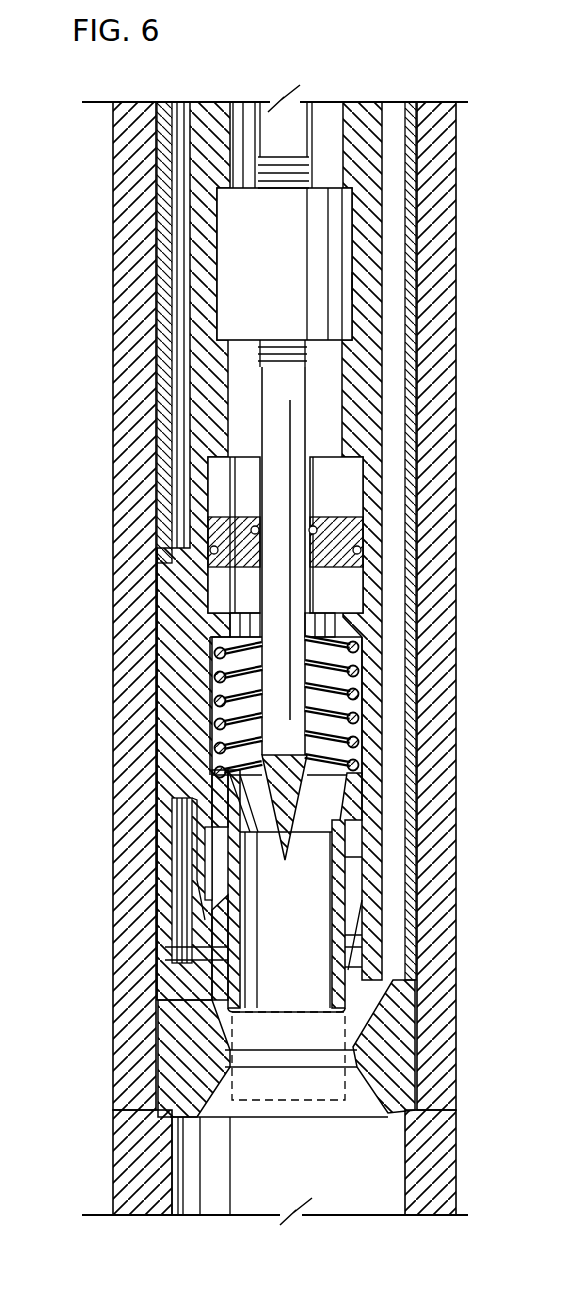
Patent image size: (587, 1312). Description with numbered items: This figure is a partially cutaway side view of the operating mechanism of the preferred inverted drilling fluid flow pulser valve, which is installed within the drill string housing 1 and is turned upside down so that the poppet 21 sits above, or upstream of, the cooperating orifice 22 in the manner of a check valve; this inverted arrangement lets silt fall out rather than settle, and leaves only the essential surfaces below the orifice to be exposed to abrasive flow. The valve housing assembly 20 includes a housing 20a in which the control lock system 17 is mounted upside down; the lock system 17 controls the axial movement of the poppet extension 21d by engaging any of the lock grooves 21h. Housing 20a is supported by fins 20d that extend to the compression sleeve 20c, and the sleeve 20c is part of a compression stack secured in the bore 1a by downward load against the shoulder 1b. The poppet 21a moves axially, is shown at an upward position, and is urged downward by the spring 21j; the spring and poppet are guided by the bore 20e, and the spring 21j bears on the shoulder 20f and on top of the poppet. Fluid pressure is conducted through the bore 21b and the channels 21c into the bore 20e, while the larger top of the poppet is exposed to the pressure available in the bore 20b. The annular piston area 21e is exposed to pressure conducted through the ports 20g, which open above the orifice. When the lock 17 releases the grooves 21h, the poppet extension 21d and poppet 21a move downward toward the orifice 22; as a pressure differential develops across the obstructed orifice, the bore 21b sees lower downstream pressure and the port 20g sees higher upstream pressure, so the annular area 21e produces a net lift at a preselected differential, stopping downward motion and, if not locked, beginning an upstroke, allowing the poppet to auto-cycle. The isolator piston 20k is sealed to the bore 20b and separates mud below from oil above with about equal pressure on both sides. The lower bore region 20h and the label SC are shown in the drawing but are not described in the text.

The drill string housing 1 is at (108, 333).
The bore 1a is at (158, 423).
The shoulder 1b is at (420, 1108).
The control lock system 17 is at (284, 277).
The valve housing assembly 20 is at (385, 365).
The housing 20a is at (385, 440).
The bore 20b is at (363, 492).
The compression sleeve 20c is at (415, 595).
The fins 20d is at (160, 762).
The bore 20e is at (212, 668).
The shoulder 20f is at (365, 655).
The ports 20g is at (200, 888).
The lower housing bore 20h is at (350, 935).
The isolator piston 20k is at (360, 524).
The poppet 21 is at (367, 785).
The poppet 21a is at (347, 857).
The bore 21b is at (286, 920).
The channels 21c is at (302, 807).
The poppet extension 21d is at (283, 561).
The annular piston area 21e is at (207, 838).
The lock grooves 21h is at (280, 160).
The spring 21j is at (216, 710).
The orifice 22 is at (266, 1052).
The sliding connection SC is at (355, 272).